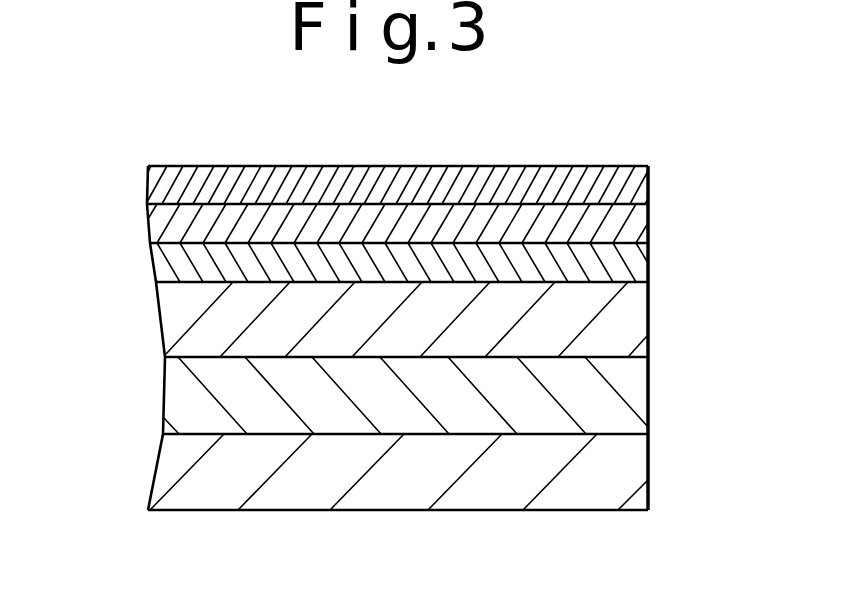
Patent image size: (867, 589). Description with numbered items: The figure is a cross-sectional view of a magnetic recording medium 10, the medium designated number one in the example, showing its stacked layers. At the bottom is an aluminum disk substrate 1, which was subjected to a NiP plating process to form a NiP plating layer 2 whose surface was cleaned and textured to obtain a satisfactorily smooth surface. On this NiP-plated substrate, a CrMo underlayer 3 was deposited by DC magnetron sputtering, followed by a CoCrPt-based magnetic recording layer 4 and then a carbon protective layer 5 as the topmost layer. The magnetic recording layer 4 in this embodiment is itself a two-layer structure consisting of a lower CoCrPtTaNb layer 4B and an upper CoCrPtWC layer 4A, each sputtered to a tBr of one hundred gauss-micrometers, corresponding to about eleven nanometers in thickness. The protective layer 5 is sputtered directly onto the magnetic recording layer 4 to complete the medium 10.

The magnetic recording medium 10 is at (411, 297).
The carbon protective layer 5 is at (632, 192).
The CoCrPt-based magnetic recording layer 4 is at (140, 205).
The CoCrPtWC layer 4A is at (628, 232).
The CoCrPtTaNb layer 4B is at (623, 262).
The underlayer 3 is at (615, 323).
The NiP plating layer 2 is at (615, 405).
The aluminum disk substrate 1 is at (612, 465).